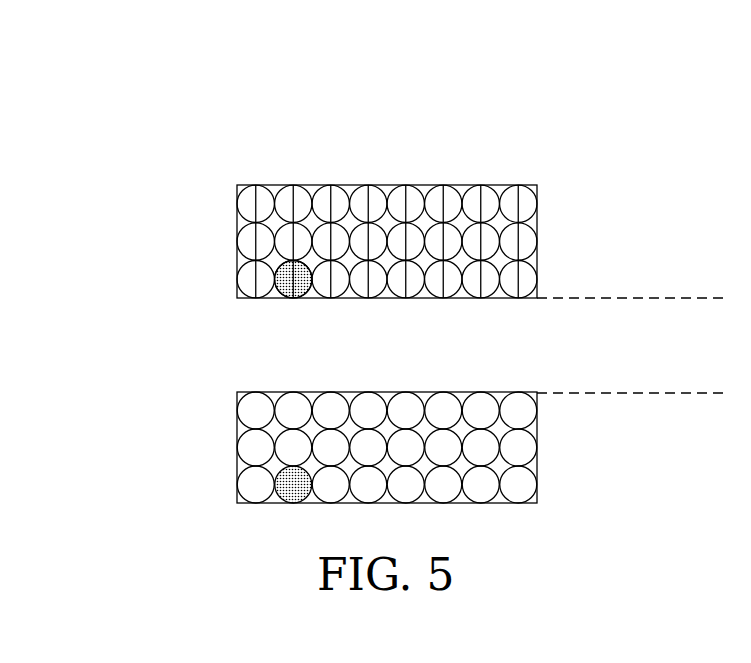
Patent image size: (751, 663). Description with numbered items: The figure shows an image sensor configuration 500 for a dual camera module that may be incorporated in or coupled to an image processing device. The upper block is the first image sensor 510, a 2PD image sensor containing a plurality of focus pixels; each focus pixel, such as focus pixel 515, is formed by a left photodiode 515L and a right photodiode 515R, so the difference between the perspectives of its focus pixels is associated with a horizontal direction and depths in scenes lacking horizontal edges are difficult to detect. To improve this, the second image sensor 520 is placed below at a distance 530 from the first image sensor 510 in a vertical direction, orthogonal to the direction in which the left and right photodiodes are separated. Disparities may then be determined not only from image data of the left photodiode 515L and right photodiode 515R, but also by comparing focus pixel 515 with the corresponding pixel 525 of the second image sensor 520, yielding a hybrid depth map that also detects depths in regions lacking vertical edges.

The image sensor configuration 500 is at (185, 72).
The first image sensor 510 is at (237, 185).
The focus pixel 515 is at (277, 260).
The left photodiode 515L is at (277, 284).
The right photodiode 515R is at (303, 283).
The second image sensor 520 is at (510, 392).
The pixel 525 is at (290, 492).
The distance 530 is at (677, 393).